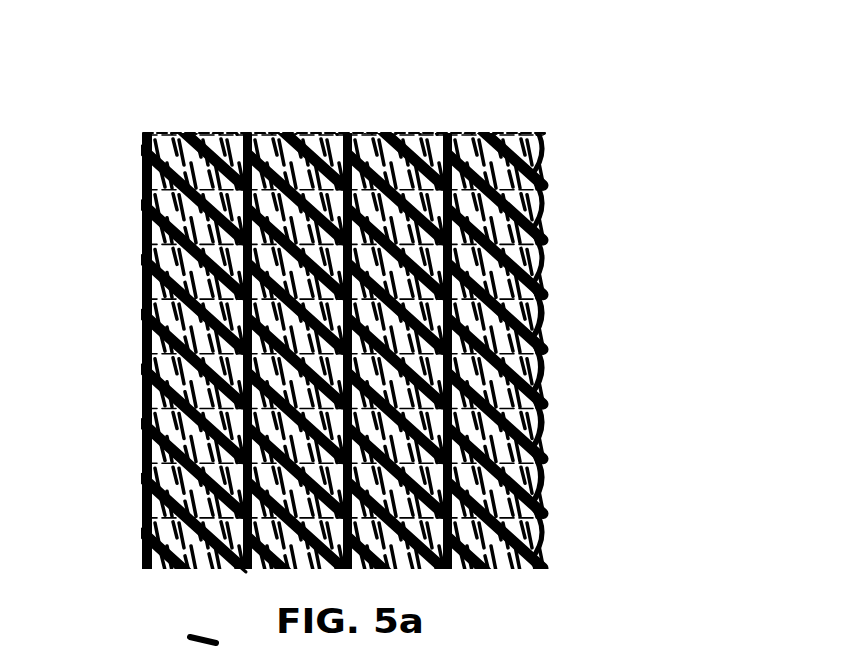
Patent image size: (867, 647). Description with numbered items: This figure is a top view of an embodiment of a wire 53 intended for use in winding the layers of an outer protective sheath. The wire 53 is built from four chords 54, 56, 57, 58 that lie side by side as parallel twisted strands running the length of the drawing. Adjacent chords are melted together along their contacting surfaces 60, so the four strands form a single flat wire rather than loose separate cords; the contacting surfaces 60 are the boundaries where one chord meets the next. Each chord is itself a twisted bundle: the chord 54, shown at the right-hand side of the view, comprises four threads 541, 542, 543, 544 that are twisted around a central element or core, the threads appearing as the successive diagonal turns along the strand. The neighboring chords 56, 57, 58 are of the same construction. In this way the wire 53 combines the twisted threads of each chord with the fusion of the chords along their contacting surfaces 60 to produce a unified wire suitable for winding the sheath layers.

The wire 53 is at (560, 131).
The chord 54 is at (483, 123).
The chord 56 is at (397, 128).
The chord 57 is at (290, 119).
The chord 58 is at (198, 128).
The thread 541 is at (547, 313).
The thread 542 is at (545, 367).
The thread 543 is at (543, 420).
The thread 544 is at (543, 478).
The contacting surfaces 60 is at (240, 568).